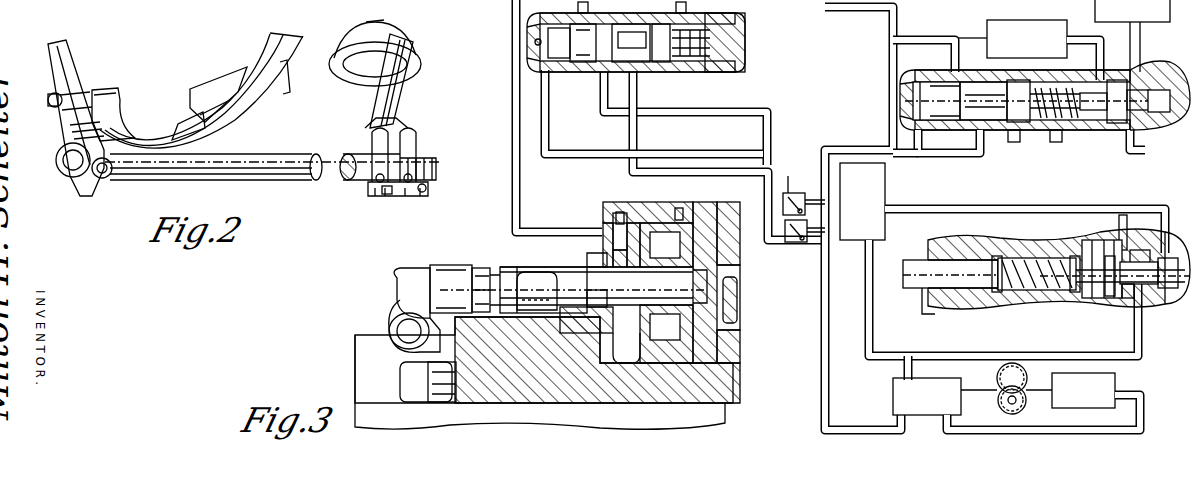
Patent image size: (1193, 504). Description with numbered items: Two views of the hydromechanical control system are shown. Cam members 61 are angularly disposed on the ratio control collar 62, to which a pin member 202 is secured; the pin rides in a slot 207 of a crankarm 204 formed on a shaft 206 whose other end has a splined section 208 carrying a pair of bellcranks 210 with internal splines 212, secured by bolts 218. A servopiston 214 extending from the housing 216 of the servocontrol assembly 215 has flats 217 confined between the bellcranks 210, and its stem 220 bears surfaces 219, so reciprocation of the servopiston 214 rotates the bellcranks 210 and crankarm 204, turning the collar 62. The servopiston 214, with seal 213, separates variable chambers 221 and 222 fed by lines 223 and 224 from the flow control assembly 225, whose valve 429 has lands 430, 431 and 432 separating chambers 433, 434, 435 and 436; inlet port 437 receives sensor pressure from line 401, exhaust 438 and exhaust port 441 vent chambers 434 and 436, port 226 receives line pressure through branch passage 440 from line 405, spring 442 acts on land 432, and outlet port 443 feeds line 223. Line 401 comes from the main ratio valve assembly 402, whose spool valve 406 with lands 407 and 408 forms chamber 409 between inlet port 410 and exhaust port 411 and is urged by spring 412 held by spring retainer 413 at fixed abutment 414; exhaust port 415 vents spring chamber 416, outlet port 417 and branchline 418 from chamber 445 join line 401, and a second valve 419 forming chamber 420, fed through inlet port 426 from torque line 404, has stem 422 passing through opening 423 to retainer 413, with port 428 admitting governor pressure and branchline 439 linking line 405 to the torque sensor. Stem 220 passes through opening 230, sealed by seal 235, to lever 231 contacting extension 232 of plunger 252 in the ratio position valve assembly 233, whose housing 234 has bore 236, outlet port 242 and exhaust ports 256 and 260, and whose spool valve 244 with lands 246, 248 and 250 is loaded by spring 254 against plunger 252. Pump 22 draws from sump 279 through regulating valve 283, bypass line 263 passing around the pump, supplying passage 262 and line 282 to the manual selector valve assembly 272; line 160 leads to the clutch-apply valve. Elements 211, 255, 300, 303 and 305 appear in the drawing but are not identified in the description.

In FIG. 3, the pump 22 is at (1008, 404).
In FIG. 2, the cam members 61 is at (223, 82).
In FIG. 2, the ratio control collar 62 is at (287, 68).
In FIG. 3, the line 160 is at (788, 242).
In FIG. 2, the pin member 202 is at (52, 98).
In FIG. 2, the crankarm 204 is at (63, 120).
In FIG. 2, the shaft 206 is at (296, 160).
In FIG. 2, the slot 207 is at (66, 90).
In FIG. 2, the splined section 208 is at (415, 160).
In FIG. 2, the bellcranks 210 is at (405, 130).
In FIG. 3, the bellcranks 210 is at (520, 332).
In FIG. 2, the piston disk 211 is at (408, 52).
In FIG. 2, the internal splines 212 is at (392, 192).
In FIG. 3, the seal 213 is at (660, 365).
In FIG. 3, the servopiston 214 is at (688, 322).
In FIG. 3, the servocontrol assembly 215 is at (742, 360).
In FIG. 3, the housing 216 is at (603, 212).
In FIG. 3, the flats 217 is at (525, 270).
In FIG. 2, the bolts 218 is at (428, 188).
In FIG. 2, the surfaces 219 is at (395, 115).
In FIG. 3, the surfaces 219 is at (590, 310).
In FIG. 2, the stem 220 is at (395, 95).
In FIG. 3, the stem 220 is at (581, 354).
In FIG. 3, the variable chamber 221 is at (620, 212).
In FIG. 3, the variable chamber 222 is at (684, 192).
In FIG. 3, the line 223 is at (512, 200).
In FIG. 3, the line 224 is at (752, 245).
In FIG. 3, the flow control assembly 225 is at (528, 18).
In FIG. 3, the port 226 is at (625, 72).
In FIG. 3, the opening 230 is at (587, 258).
In FIG. 3, the lever 231 is at (400, 310).
In FIG. 3, the extension 232 is at (445, 388).
In FIG. 3, the ratio position valve assembly 233 is at (1019, 324).
In FIG. 3, the housing 234 is at (946, 306).
In FIG. 3, the seal 235 is at (600, 312).
In FIG. 3, the bore 236 is at (1072, 256).
In FIG. 3, the outlet port 242 is at (1123, 218).
In FIG. 3, the spool valve 244 is at (1128, 300).
In FIG. 3, the land 246 is at (1095, 295).
In FIG. 3, the land 248 is at (1168, 294).
In FIG. 3, the land 250 is at (1095, 250).
In FIG. 3, the plunger 252 is at (998, 288).
In FIG. 3, the spring 254 is at (998, 256).
In FIG. 3, the land 255 is at (1110, 298).
In FIG. 3, the exhaust port 256 is at (1037, 331).
In FIG. 3, the exhaust port 260 is at (1150, 244).
In FIG. 3, the passage 262 is at (1142, 355).
In FIG. 3, the bypass line 263 is at (1142, 412).
In FIG. 3, the manual selector valve assembly 272 is at (887, 196).
In FIG. 3, the sump 279 is at (1116, 378).
In FIG. 3, the line 282 is at (873, 262).
In FIG. 3, the pressure regulator 283 is at (893, 392).
In FIG. 3, the solenoid valve 300 is at (800, 244).
In FIG. 3, the solenoid valves 303 is at (790, 190).
In FIG. 3, the conduit 305 is at (893, 88).
In FIG. 3, the line 401 is at (516, 100).
In FIG. 3, the main ratio valve assembly 402 is at (900, 72).
In FIG. 3, the line 404 is at (1150, 22).
In FIG. 3, the line 405 is at (890, 10).
In FIG. 3, the spool valve 406 is at (1025, 100).
In FIG. 3, the land 407 is at (937, 85).
In FIG. 3, the land 408 is at (1010, 142).
In FIG. 3, the intermediate chamber 409 is at (978, 85).
In FIG. 3, the inlet port 410 is at (950, 70).
In FIG. 3, the exhaust port 411 is at (1016, 150).
In FIG. 3, the spring 412 is at (1050, 88).
In FIG. 3, the spring retainer 413 is at (1017, 101).
In FIG. 3, the fixed abutment 414 is at (1080, 116).
In FIG. 3, the exhaust port 415 is at (1045, 124).
In FIG. 3, the spring chamber 416 is at (1052, 140).
In FIG. 3, the outlet port 417 is at (972, 150).
In FIG. 3, the branchline 418 is at (930, 156).
In FIG. 3, the second valve 419 is at (1135, 118).
In FIG. 3, the variable chamber 420 is at (1128, 152).
In FIG. 3, the stem 422 is at (1098, 76).
In FIG. 3, the opening 423 is at (1094, 124).
In FIG. 3, the inlet port 426 is at (1130, 50).
In FIG. 3, the port 428 is at (1165, 60).
In FIG. 3, the valve 429 is at (545, 38).
In FIG. 3, the land 430 is at (536, 40).
In FIG. 3, the land 431 is at (580, 62).
In FIG. 3, the land 432 is at (668, 68).
In FIG. 3, the variable chamber 433 is at (598, 24).
In FIG. 3, the variable chamber 434 is at (545, 60).
In FIG. 3, the variable chamber 435 is at (638, 24).
In FIG. 3, the variable chamber 436 is at (712, 10).
In FIG. 3, the inlet port 437 is at (540, 52).
In FIG. 3, the exhaust 438 is at (578, 8).
In FIG. 3, the branchline 439 is at (1025, 20).
In FIG. 3, the branch passage 440 is at (638, 140).
In FIG. 3, the exhaust port 441 is at (686, 6).
In FIG. 3, the spring 442 is at (722, 40).
In FIG. 3, the outlet port 443 is at (600, 82).
In FIG. 3, the chamber 445 is at (905, 112).